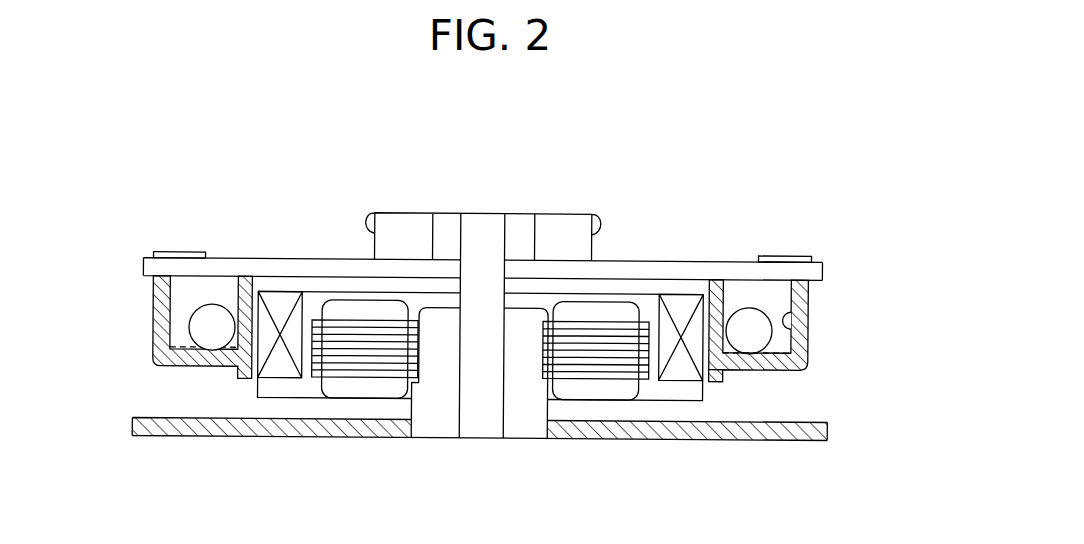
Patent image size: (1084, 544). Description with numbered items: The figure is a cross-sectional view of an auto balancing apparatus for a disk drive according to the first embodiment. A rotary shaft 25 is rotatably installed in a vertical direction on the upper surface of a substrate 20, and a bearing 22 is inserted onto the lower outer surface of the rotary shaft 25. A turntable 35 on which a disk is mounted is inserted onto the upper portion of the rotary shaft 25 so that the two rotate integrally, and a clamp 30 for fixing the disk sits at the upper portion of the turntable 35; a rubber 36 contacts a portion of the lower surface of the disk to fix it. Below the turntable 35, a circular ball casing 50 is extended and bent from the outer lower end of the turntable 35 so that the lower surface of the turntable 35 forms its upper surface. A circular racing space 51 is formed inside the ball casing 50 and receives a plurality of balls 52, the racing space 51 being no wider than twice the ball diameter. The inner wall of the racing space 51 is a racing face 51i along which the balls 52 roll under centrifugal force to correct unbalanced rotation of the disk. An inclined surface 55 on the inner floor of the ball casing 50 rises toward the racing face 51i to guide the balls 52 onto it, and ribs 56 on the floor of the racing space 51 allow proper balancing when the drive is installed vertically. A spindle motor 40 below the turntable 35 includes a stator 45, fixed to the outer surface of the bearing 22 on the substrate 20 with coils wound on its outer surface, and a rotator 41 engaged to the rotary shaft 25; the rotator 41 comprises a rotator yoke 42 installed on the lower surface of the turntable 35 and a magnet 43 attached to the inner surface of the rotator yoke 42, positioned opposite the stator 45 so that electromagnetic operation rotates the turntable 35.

The substrate 20 is at (169, 434).
The bearing 22 is at (528, 413).
The rotary shaft 25 is at (482, 227).
The clamp 30 is at (392, 224).
The turntable 35 is at (815, 270).
The rubber 36 is at (802, 256).
The spindle motor 40 is at (691, 416).
The rotator 41 is at (269, 414).
The rotator yoke 42 is at (635, 284).
The magnet 43 is at (278, 300).
The stator 45 is at (348, 383).
The ball casing 50 is at (433, 292).
The racing space 51 is at (182, 297).
The racing face 51i is at (792, 328).
The balls 52 is at (215, 314).
The inclined surface 55 is at (783, 361).
The ribs 56 is at (728, 361).